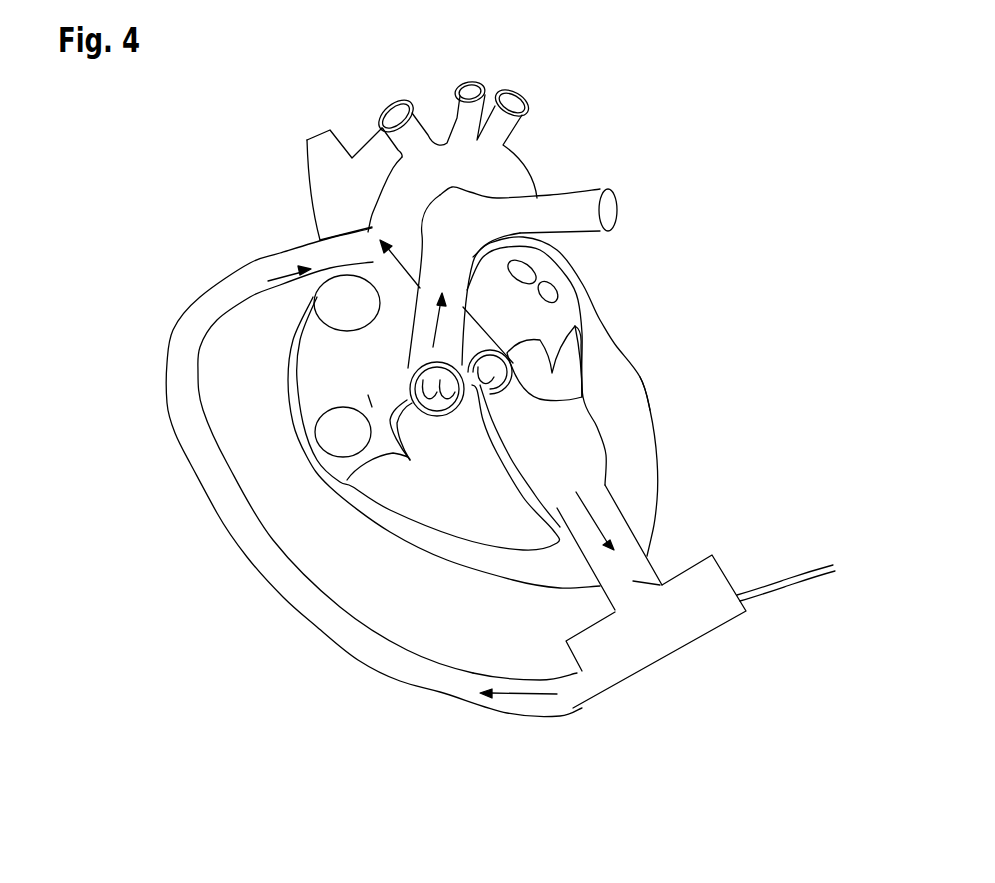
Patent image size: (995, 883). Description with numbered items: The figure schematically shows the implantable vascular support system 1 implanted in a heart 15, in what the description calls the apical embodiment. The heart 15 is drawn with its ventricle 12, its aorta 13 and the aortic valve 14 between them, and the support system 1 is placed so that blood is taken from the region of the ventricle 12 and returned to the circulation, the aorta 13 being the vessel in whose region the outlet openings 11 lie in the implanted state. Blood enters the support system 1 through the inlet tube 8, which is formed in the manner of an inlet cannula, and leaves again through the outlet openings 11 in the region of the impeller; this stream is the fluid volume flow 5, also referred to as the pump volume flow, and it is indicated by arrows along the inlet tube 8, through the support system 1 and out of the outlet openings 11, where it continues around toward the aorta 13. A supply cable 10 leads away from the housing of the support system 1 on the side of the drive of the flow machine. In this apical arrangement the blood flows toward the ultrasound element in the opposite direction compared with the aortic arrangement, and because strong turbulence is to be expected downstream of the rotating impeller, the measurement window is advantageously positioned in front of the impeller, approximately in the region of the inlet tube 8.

The support system 1 is at (702, 628).
The fluid volume flow 5 is at (273, 276).
The inlet tube 8 is at (662, 582).
The supply cable 10 is at (805, 573).
The outlet openings 11 is at (573, 696).
The ventricle 12 is at (580, 453).
The aorta 13 is at (459, 173).
The aortic valve 14 is at (545, 400).
The heart 15 is at (650, 410).